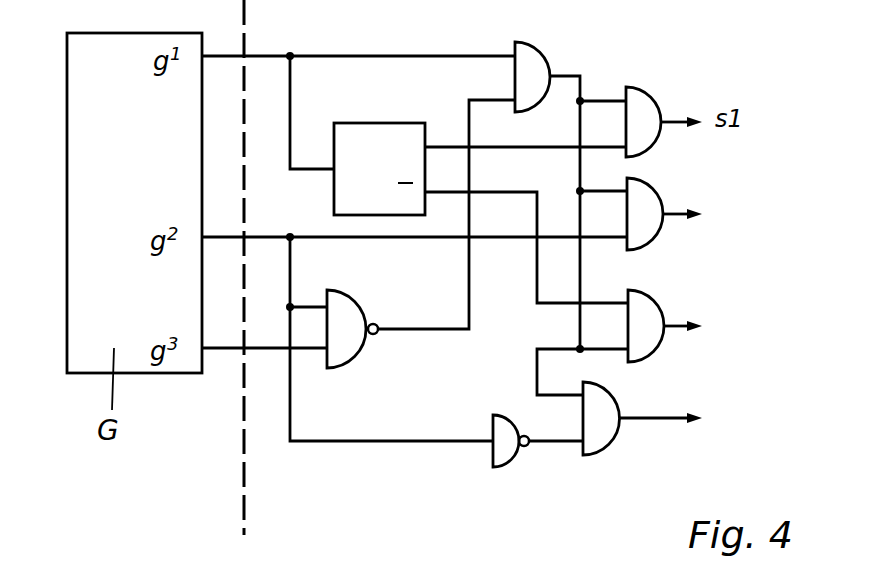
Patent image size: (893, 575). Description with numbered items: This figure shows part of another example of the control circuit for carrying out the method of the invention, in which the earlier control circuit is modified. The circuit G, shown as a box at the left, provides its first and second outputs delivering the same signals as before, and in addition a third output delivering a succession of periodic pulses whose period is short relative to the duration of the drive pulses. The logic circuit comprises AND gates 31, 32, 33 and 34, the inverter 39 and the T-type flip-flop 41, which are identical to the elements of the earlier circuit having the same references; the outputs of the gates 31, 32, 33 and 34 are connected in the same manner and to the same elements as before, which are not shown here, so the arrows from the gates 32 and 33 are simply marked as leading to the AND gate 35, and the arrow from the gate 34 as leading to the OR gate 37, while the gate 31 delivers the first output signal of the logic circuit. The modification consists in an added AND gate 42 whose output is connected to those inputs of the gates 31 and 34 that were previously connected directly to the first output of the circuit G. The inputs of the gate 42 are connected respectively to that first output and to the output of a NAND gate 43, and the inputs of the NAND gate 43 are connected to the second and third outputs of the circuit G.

The AND gate 31 is at (635, 108).
The AND gate 32 is at (638, 200).
The AND gate 33 is at (638, 313).
The AND gate 34 is at (598, 405).
The AND gate 35 is at (723, 270).
The OR gate 37 is at (698, 418).
The inverter 39 is at (503, 442).
The T-type flip-flop 41 is at (367, 140).
The AND gate 42 is at (528, 63).
The NAND gate 43 is at (345, 337).